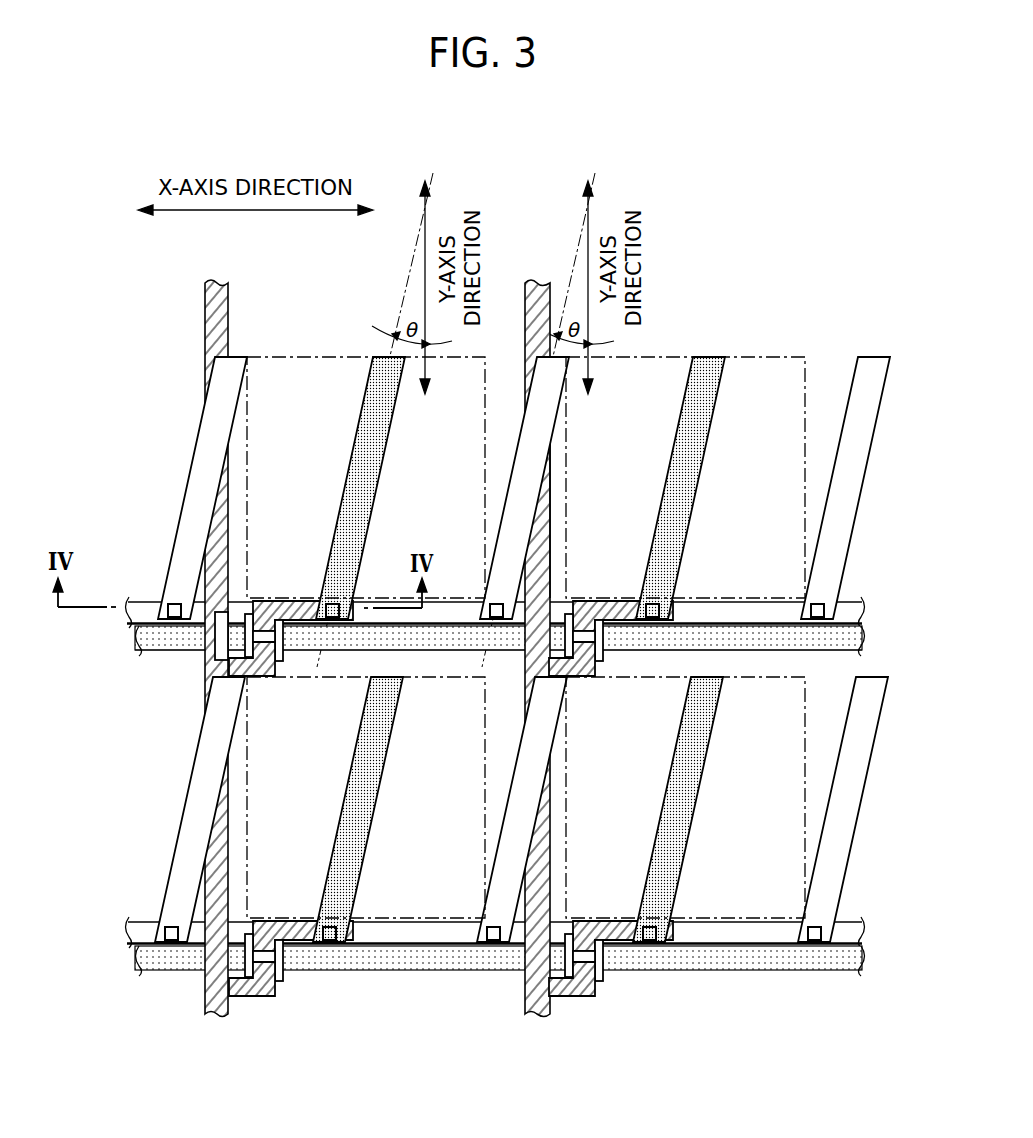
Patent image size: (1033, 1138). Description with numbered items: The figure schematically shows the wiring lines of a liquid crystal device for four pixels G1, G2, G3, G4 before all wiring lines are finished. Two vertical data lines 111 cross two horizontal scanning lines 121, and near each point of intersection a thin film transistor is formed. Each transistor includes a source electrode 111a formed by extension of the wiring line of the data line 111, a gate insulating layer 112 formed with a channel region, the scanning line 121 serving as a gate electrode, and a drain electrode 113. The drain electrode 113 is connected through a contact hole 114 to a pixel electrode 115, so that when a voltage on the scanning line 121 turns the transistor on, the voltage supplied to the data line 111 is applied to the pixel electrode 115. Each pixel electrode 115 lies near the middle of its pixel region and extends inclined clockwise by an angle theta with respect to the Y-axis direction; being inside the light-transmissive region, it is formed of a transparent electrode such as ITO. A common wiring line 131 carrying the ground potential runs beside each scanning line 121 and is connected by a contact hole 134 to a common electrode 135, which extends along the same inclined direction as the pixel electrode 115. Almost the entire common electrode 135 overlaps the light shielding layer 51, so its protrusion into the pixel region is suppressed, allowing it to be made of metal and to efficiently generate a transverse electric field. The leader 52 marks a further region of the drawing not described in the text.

The light shielding layer 51 is at (562, 476).
The second reference line 52 is at (436, 670).
The data line 111 is at (217, 310).
The source electrode 111a is at (260, 667).
The gate insulating layer 112 is at (280, 637).
The drain electrode 113 is at (297, 598).
The contact hole 114 is at (343, 598).
The pixel electrode 115 is at (378, 438).
The scanning line 121 is at (152, 640).
The common wiring line 131 is at (140, 605).
The contact hole 134 is at (172, 590).
The common electrode 135 is at (233, 413).
The pixel G1 is at (297, 357).
The pixel G2 is at (757, 357).
The pixel G3 is at (447, 917).
The pixel G4 is at (769, 917).